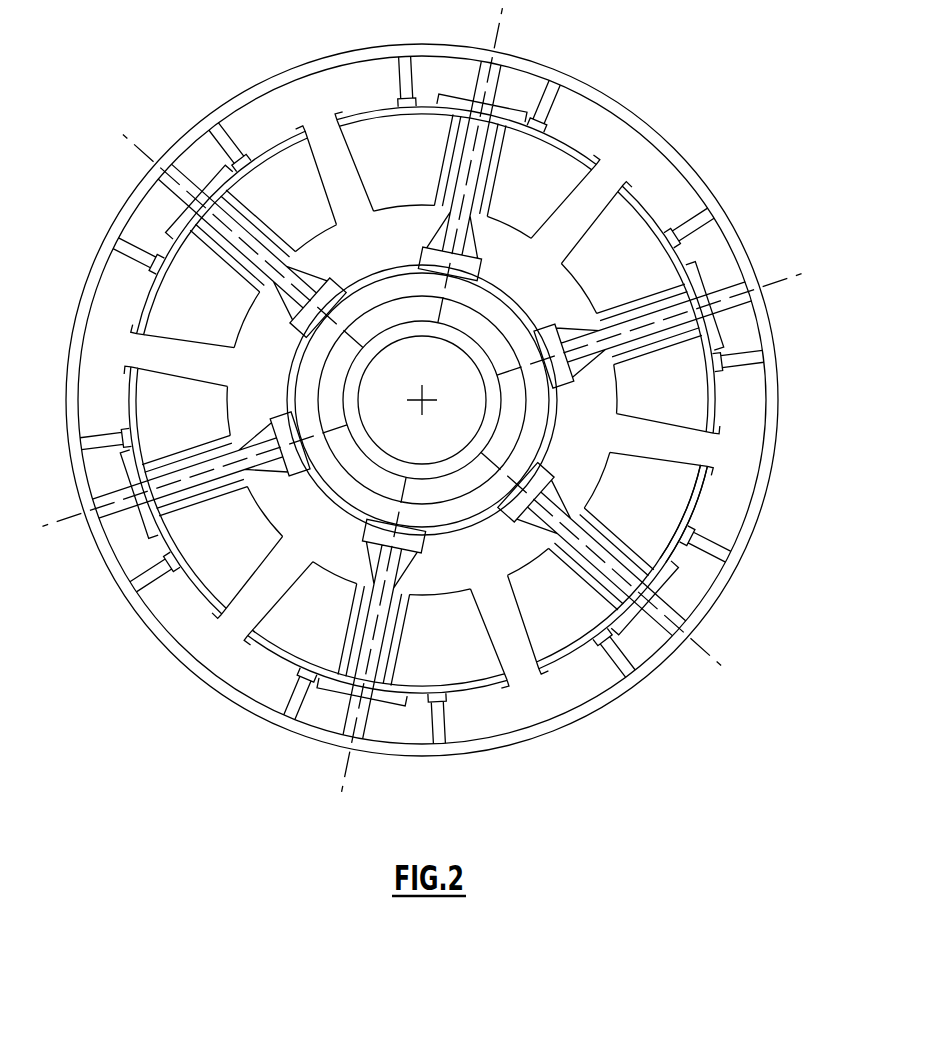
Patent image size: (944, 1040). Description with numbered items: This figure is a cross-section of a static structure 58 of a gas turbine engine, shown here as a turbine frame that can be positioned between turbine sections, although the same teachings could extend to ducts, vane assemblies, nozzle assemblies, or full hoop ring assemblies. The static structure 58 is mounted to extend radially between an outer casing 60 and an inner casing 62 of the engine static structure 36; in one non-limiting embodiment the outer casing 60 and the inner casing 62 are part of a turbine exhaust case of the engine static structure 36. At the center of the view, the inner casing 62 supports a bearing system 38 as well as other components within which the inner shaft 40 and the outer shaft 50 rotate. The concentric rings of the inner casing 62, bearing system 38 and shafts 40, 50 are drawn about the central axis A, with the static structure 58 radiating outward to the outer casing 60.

The engine static structure 36 is at (422, 410).
The bearing system 38 is at (365, 305).
The inner shaft 40 is at (492, 424).
The outer shaft 50 is at (512, 407).
The static structure 58 is at (703, 510).
The outer casing 60 is at (776, 496).
The inner casing 62 is at (473, 530).
The axis of rotation A is at (424, 402).